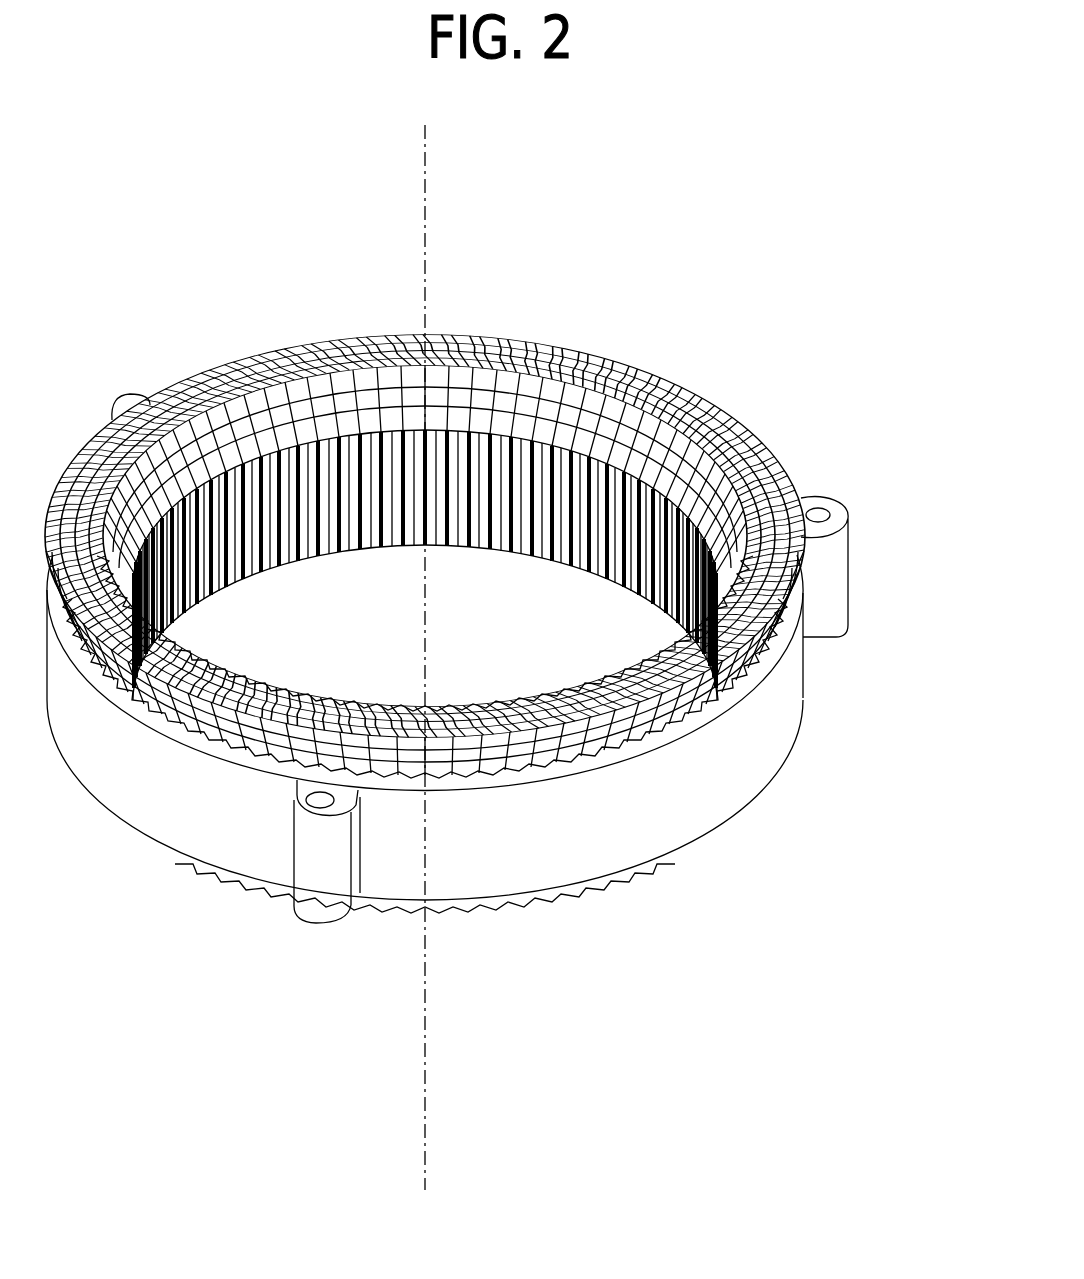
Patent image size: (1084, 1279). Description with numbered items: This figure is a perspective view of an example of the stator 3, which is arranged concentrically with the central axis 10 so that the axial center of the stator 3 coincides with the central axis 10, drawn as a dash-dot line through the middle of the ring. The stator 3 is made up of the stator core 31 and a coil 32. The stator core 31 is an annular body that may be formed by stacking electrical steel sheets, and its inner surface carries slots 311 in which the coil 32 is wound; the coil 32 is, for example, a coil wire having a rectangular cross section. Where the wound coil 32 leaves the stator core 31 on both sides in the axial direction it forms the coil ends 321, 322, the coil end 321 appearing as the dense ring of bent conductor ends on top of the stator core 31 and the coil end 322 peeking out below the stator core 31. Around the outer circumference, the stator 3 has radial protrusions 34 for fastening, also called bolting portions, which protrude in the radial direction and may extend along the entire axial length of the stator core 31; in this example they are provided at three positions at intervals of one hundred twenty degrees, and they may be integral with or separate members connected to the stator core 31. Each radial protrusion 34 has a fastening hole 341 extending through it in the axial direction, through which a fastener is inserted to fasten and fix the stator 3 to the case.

The stator 3 is at (760, 292).
The stator core 31 is at (425, 716).
The slots 311 is at (397, 777).
The coil 32 is at (424, 629).
The coil end 321 is at (645, 367).
The coil end 322 is at (545, 912).
The radial protrusion for fastening 34 is at (529, 662).
The fastening hole 341 is at (818, 508).
The central axis 10 is at (428, 1166).